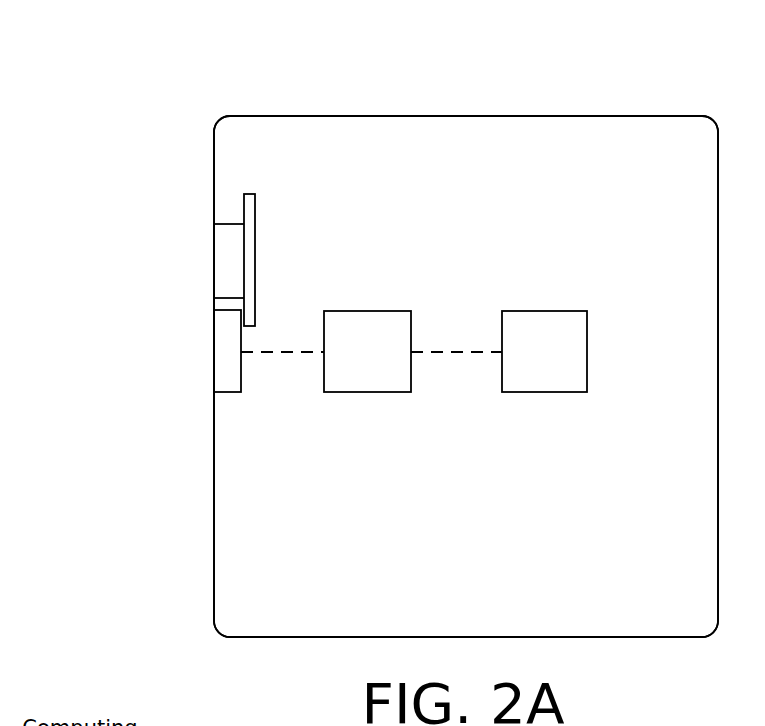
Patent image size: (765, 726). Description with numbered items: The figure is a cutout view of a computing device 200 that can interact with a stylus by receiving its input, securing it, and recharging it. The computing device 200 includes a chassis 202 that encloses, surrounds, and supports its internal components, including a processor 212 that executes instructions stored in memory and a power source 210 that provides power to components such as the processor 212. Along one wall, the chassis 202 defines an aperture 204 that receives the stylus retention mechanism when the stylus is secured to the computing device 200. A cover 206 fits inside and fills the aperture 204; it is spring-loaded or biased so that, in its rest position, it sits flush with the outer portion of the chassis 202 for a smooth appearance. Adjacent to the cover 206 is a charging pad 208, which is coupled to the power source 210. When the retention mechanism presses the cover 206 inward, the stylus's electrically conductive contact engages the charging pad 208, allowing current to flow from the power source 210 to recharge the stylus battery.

The computing device 200 is at (205, 78).
The chassis 202 is at (593, 112).
The aperture 204 is at (200, 238).
The cover 206 is at (214, 257).
The charging pad 208 is at (230, 393).
The power source 210 is at (383, 393).
The processor 212 is at (547, 393).